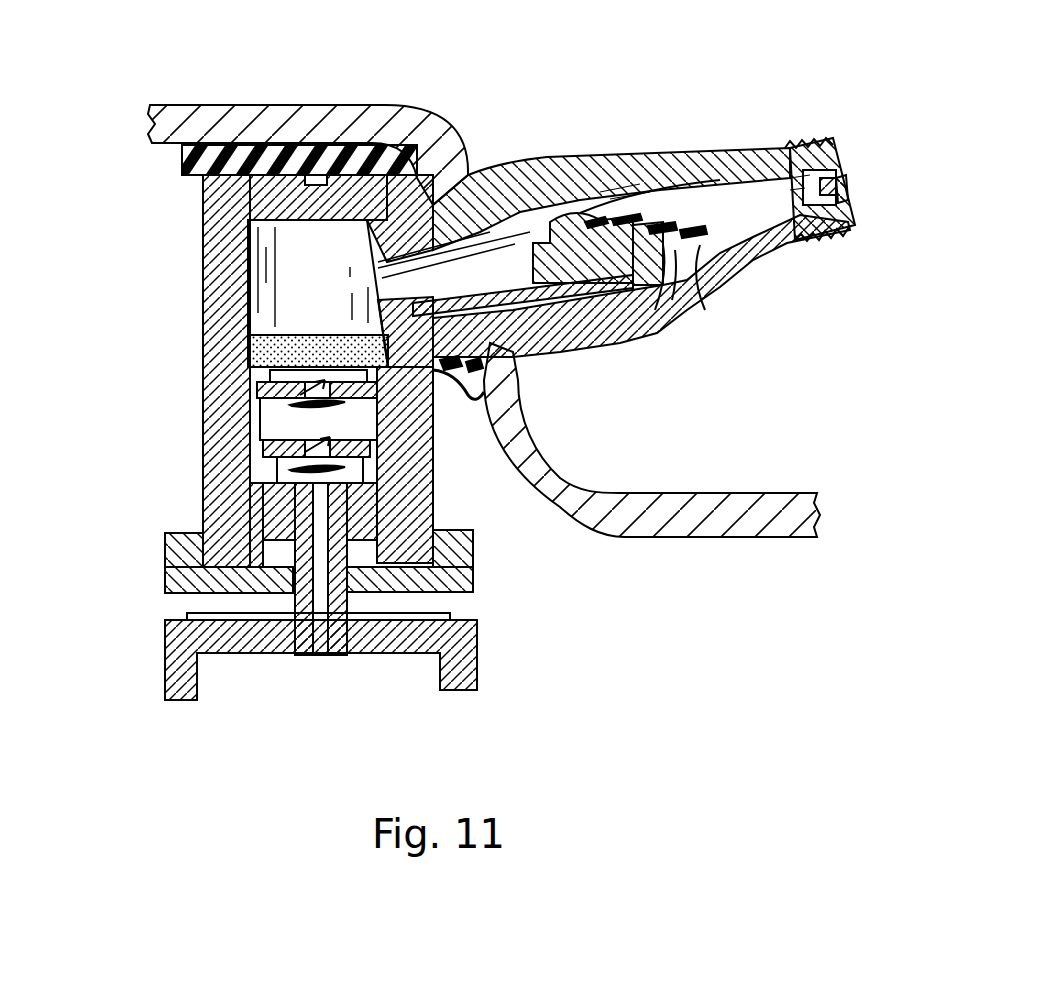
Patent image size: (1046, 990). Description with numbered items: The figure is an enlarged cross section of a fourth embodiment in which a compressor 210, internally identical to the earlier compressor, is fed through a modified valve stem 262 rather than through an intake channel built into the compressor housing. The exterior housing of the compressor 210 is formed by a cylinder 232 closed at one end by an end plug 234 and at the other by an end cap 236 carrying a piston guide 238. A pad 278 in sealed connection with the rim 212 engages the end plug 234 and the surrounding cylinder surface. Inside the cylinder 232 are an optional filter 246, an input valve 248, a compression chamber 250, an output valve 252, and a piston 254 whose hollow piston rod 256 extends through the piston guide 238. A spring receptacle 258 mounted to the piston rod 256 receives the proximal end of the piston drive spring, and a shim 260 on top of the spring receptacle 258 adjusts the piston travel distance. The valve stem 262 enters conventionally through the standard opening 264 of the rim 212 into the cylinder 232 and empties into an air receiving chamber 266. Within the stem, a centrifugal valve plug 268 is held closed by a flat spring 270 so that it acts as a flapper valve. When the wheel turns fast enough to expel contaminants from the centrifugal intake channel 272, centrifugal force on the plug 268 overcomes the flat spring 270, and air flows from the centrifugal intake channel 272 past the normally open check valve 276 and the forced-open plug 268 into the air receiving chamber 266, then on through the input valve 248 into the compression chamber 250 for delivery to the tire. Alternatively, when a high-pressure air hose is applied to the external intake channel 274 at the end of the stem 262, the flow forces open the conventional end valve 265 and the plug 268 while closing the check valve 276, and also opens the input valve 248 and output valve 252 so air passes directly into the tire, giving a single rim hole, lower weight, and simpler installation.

The compressor 210 is at (203, 393).
The rim 212 is at (352, 112).
The cylinder 232 is at (203, 468).
The end plug 234 is at (243, 190).
The end cap 236 is at (447, 593).
The piston guide 238 is at (443, 531).
The filter 246 is at (245, 358).
The input valve 248 is at (337, 402).
The compression chamber 250 is at (350, 420).
The output valve 252 is at (207, 537).
The piston 254 is at (210, 567).
The hollow piston rod 256 is at (293, 547).
The spring receptacle 258 is at (480, 660).
The shim 260 is at (213, 620).
The valve stem 262 is at (654, 207).
The standard opening 264 is at (517, 350).
The end valve 265 is at (820, 190).
The air receiving chamber 266 is at (333, 286).
The centrifugal valve plug 268 is at (587, 157).
The flat spring 270 is at (490, 273).
The centrifugal intake channel 272 is at (677, 307).
The external intake channel 274 is at (775, 195).
The check valve 276 is at (680, 220).
The pad 278 is at (253, 157).